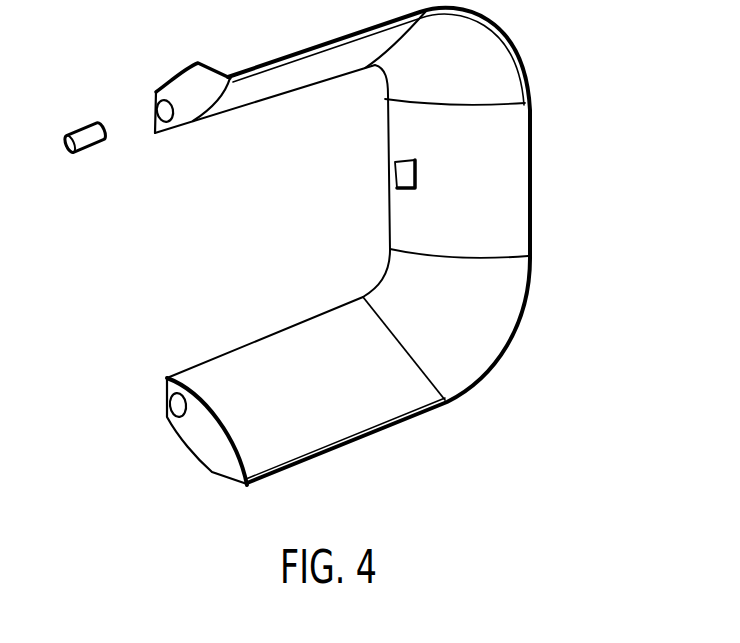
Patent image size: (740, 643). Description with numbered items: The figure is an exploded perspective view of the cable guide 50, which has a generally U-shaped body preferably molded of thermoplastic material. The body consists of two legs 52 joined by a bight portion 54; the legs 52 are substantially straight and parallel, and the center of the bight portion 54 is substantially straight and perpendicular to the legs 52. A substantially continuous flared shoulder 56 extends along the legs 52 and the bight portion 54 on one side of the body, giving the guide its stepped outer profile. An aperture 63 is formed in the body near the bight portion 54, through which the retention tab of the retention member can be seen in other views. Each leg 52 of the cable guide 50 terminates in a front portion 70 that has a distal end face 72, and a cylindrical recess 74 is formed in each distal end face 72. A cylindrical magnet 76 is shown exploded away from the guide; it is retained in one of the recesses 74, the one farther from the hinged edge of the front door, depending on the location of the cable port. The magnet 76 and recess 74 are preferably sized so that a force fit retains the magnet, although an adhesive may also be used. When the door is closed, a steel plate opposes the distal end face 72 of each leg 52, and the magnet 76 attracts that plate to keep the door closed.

The cable guide 50 is at (593, 121).
The legs 52 is at (256, 90).
The bight portion 54 is at (516, 171).
The flared shoulder 56 is at (309, 68).
The aperture 63 is at (396, 172).
The front portion 70 is at (196, 372).
The distal end face 72 is at (195, 107).
The cylindrical recess 74 is at (165, 120).
The cylindrical magnet 76 is at (89, 137).